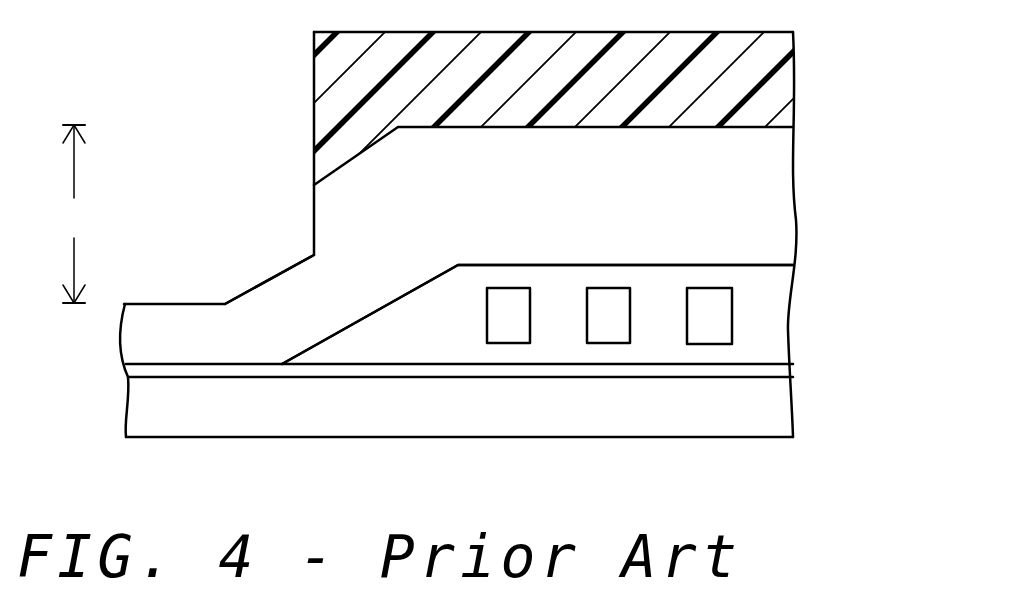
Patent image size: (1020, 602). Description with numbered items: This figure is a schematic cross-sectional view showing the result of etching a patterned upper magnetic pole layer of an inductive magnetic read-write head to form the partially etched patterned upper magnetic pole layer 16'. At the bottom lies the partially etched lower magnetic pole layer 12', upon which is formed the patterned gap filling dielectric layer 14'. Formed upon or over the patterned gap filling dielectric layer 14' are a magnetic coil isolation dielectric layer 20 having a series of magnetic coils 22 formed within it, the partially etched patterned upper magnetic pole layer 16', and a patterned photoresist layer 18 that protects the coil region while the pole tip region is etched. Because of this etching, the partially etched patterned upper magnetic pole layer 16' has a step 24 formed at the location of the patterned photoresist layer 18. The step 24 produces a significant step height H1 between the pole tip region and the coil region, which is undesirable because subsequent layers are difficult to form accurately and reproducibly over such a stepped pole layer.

The partially etched lower magnetic pole layer 12' is at (415, 370).
The patterned gap filling dielectric layer 14' is at (415, 369).
The partially etched patterned upper magnetic pole layer 16' is at (499, 198).
The patterned photoresist layer 18 is at (773, 90).
The magnetic coil isolation dielectric layer 20 is at (773, 335).
The magnetic coils 22 is at (507, 299).
The step 24 is at (286, 252).
The step height H1 is at (72, 214).